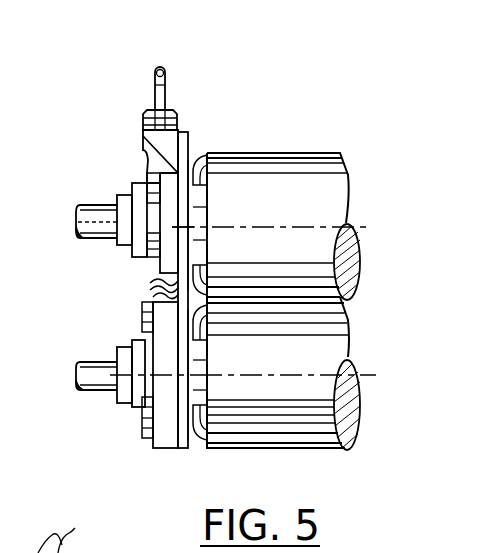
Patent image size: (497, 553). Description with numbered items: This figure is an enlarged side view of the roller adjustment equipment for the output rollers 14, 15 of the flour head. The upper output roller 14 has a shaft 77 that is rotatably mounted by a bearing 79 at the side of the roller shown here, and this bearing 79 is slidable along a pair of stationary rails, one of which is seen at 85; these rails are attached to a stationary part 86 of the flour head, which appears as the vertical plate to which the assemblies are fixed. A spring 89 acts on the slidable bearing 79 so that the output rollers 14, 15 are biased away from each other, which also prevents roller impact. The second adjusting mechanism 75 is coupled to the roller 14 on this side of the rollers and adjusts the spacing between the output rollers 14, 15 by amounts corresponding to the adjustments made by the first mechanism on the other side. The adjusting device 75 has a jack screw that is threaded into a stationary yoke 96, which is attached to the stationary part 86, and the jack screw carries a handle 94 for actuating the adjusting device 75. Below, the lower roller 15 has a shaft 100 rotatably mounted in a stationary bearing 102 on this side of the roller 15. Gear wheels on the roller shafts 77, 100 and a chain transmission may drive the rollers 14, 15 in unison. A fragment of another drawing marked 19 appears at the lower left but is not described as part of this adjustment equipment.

The output roller 14 is at (285, 165).
The output roller 15 is at (287, 440).
The fragment 19 is at (68, 535).
The second adjusting mechanism 75 is at (138, 152).
The shaft 77 is at (78, 208).
The bearing 79 is at (133, 256).
The stationary rail 85 is at (166, 219).
The stationary part 86 is at (188, 137).
The spring 89 is at (160, 287).
The handle 94 is at (166, 70).
The yoke 96 is at (142, 136).
The shaft 100 is at (117, 360).
The stationary bearing 102 is at (134, 408).